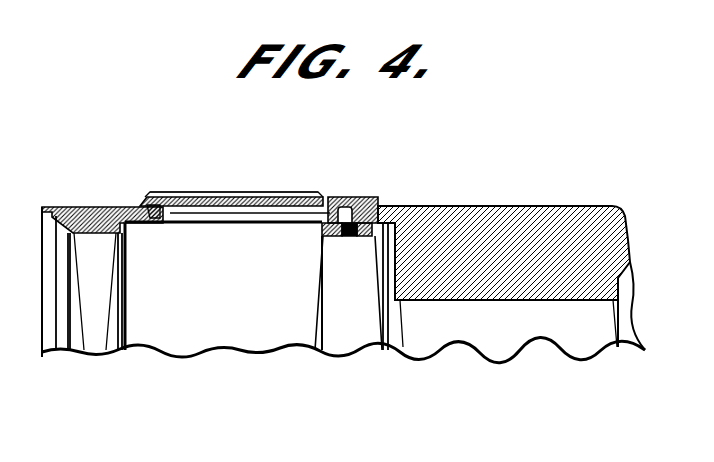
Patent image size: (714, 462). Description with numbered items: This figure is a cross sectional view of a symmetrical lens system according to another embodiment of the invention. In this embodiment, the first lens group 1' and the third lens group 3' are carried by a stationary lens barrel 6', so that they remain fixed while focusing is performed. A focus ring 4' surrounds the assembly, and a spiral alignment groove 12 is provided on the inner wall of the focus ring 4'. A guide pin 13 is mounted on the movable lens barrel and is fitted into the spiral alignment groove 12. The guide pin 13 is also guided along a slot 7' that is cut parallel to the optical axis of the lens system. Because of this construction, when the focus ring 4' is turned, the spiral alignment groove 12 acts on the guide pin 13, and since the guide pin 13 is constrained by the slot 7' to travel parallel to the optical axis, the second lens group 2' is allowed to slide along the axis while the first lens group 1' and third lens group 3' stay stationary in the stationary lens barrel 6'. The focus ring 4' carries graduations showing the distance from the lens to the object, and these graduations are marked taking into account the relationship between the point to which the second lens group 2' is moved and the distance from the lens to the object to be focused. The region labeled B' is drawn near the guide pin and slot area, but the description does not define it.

The first lens group 1' is at (102, 321).
The second lens group 2' is at (351, 329).
The third lens group 3' is at (508, 367).
The focus ring 4' is at (230, 156).
The stationary lens barrel 6' is at (511, 232).
The slot 7' is at (227, 242).
The spiral alignment groove 12 is at (263, 192).
The guide pin 13 is at (353, 197).
The bearing B' is at (306, 251).